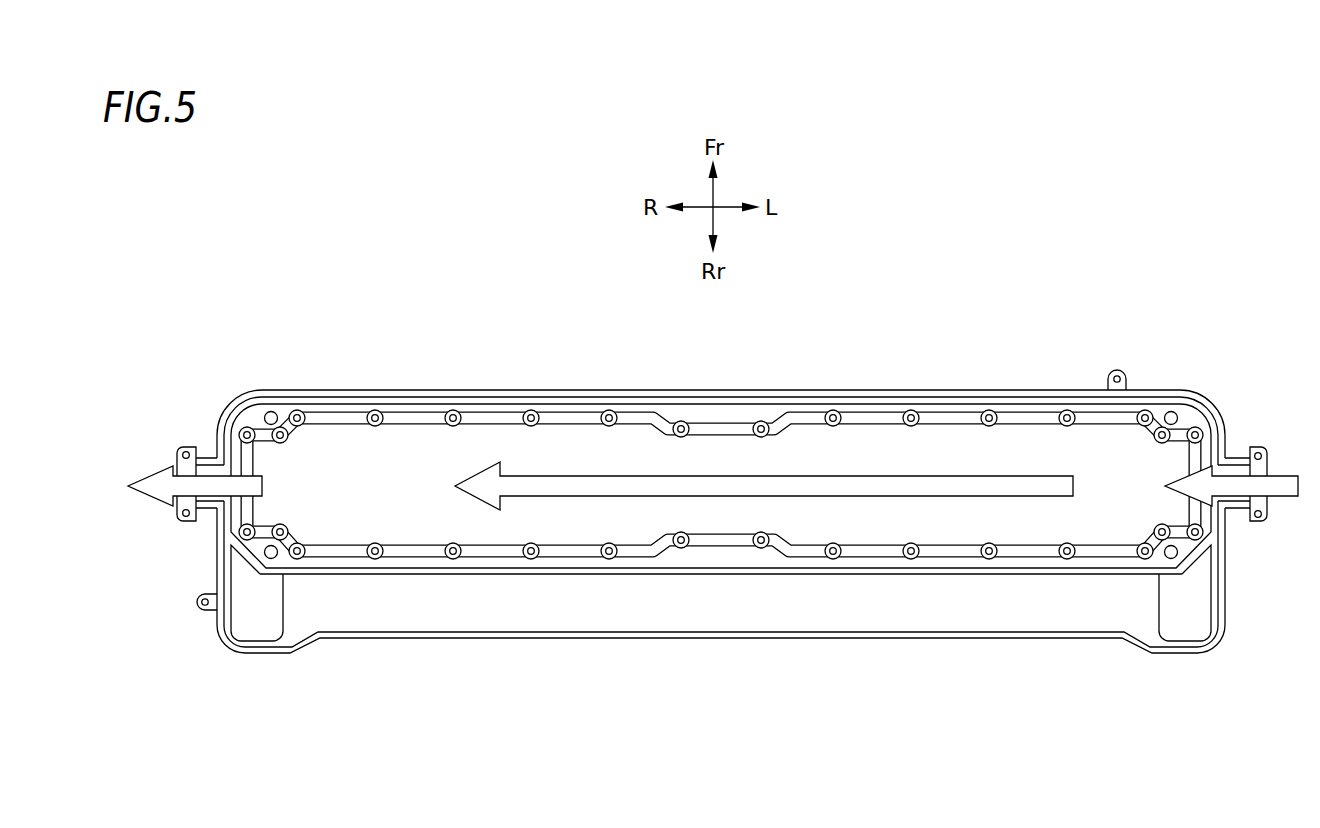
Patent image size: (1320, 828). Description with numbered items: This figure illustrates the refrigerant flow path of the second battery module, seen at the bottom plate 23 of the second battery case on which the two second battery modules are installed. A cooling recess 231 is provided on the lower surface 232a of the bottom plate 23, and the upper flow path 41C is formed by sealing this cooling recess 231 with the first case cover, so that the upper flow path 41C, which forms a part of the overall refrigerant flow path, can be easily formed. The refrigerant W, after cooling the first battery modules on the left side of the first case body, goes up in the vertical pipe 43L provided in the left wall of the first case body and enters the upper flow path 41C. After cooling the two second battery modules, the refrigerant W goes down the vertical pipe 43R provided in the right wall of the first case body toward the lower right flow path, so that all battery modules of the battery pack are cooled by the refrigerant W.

The bottom plate 23 is at (867, 390).
The cooling recess 231 is at (938, 428).
The lower surface 232a is at (748, 412).
The upper flow path 41C is at (807, 416).
The vertical pipe 43R is at (205, 457).
The vertical pipe 43L is at (1238, 458).
The refrigerant W is at (713, 482).